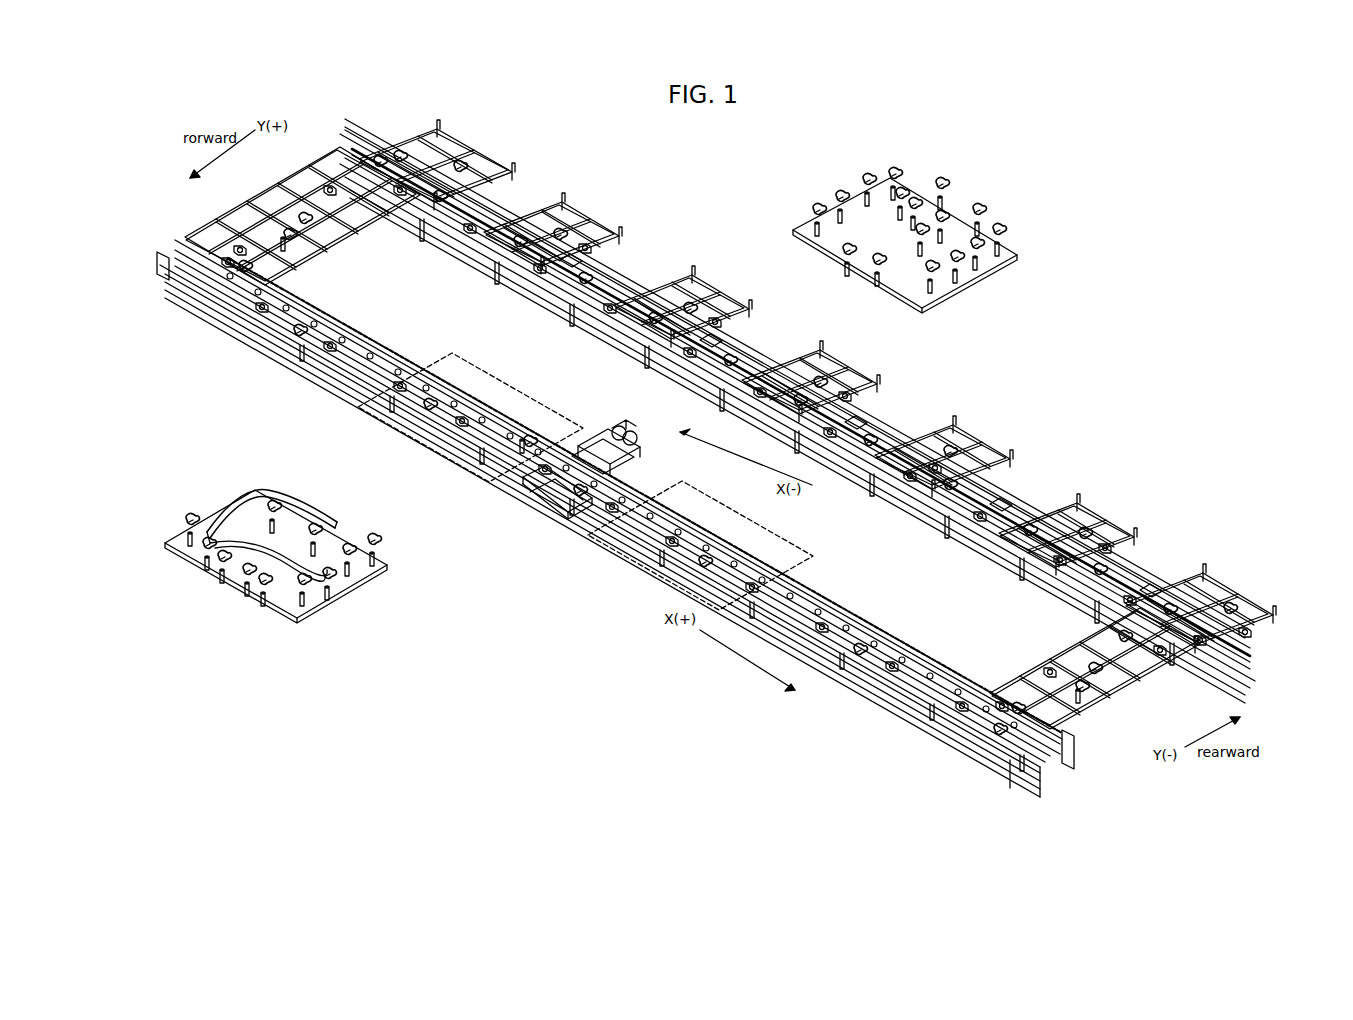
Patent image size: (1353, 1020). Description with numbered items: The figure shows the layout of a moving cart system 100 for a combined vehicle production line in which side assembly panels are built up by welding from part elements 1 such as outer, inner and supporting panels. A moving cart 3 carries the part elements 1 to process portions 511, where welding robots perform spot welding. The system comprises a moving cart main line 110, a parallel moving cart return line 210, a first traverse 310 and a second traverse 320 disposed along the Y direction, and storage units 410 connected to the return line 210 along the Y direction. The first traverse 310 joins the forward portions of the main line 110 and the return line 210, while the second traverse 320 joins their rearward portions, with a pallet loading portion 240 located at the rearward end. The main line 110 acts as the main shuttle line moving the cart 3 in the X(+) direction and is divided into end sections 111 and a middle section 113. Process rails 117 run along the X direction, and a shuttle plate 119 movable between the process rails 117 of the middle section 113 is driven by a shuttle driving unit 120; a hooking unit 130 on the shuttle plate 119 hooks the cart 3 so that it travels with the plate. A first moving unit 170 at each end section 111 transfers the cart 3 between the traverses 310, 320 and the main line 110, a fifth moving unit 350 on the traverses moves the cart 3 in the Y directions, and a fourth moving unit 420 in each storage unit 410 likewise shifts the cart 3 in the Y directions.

The moving cart system 100 is at (690, 159).
The moving cart main line 110 is at (452, 443).
The end sections 111 is at (153, 282).
The middle section 113 is at (505, 490).
The process rail 117 is at (825, 613).
The shuttle plate 119 is at (853, 640).
The shuttle driving unit 120 is at (599, 430).
The hooking unit 130 is at (527, 440).
The first moving unit 170 is at (228, 258).
The moving cart return line 210 is at (616, 287).
The pallet loading portion 240 is at (1233, 690).
The first traverse 310 is at (346, 256).
The second traverse 320 is at (1040, 660).
The fifth moving unit 350 is at (283, 238).
The storage unit 410 is at (982, 441).
The fourth moving unit 420 is at (950, 445).
The process portion 511 is at (395, 432).
The part element 1 is at (220, 507).
The moving cart 3 is at (990, 262).